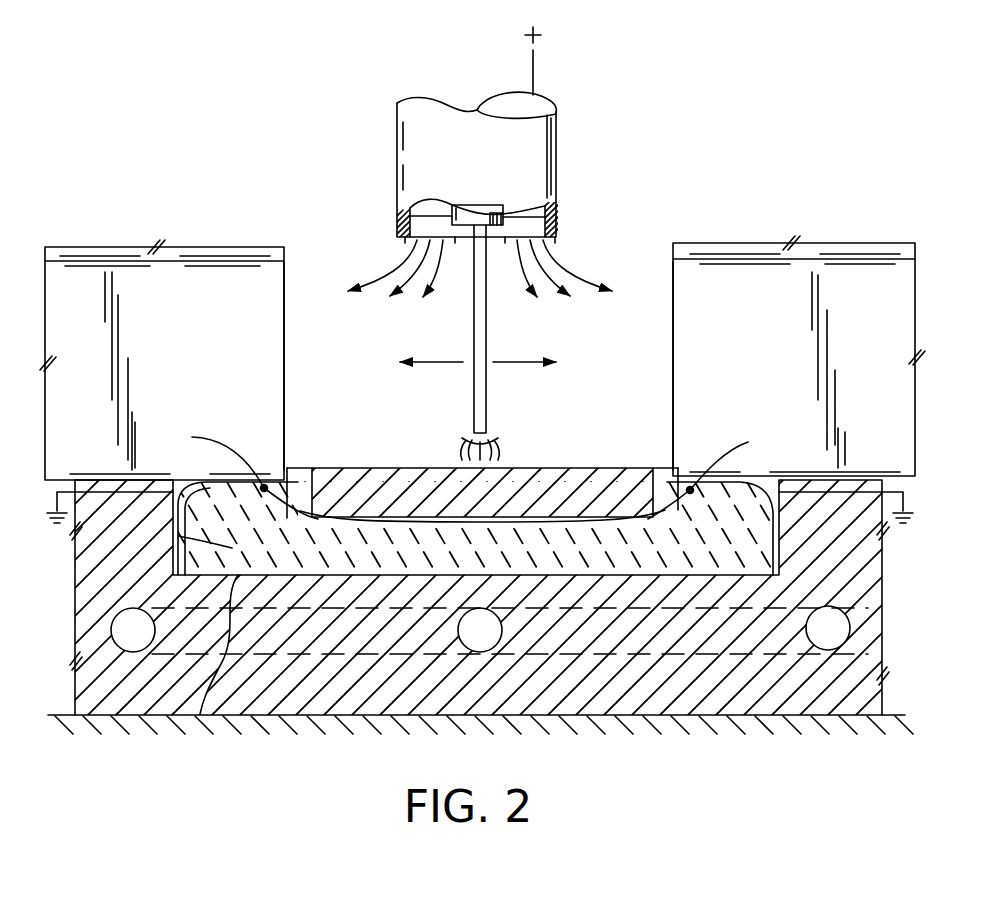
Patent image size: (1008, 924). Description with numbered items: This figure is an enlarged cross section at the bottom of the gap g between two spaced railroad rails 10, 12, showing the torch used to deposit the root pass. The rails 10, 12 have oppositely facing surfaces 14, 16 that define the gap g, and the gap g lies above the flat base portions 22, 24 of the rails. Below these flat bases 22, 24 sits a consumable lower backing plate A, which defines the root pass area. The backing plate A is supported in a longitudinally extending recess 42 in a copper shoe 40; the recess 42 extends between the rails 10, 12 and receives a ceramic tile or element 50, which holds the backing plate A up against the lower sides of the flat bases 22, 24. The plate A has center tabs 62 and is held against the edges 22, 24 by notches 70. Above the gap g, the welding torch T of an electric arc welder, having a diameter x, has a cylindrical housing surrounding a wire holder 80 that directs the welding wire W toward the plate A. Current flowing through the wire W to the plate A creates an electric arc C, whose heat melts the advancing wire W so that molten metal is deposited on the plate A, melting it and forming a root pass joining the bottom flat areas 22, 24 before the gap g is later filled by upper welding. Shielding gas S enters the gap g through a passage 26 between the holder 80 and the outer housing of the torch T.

The railroad rail 10 is at (124, 243).
The railroad rail 12 is at (752, 243).
The oppositely facing surface 14 is at (284, 332).
The oppositely facing surface 16 is at (673, 320).
The flat base portion 22 is at (268, 492).
The flat base portion 24 is at (688, 494).
The passage 26 is at (420, 215).
The copper shoe 40 is at (158, 717).
The recess 42 is at (220, 550).
The ceramic tile or element 50 is at (558, 562).
The center tab 62 is at (468, 450).
The notch 70 is at (263, 484).
The wire holder 80 is at (495, 213).
The welding torch T is at (501, 132).
The welding wire W is at (481, 285).
The shielding gas S is at (578, 270).
The electric arc C is at (466, 441).
The backing plate A is at (560, 466).
The gap g is at (322, 381).
The torch diameter x is at (397, 161).